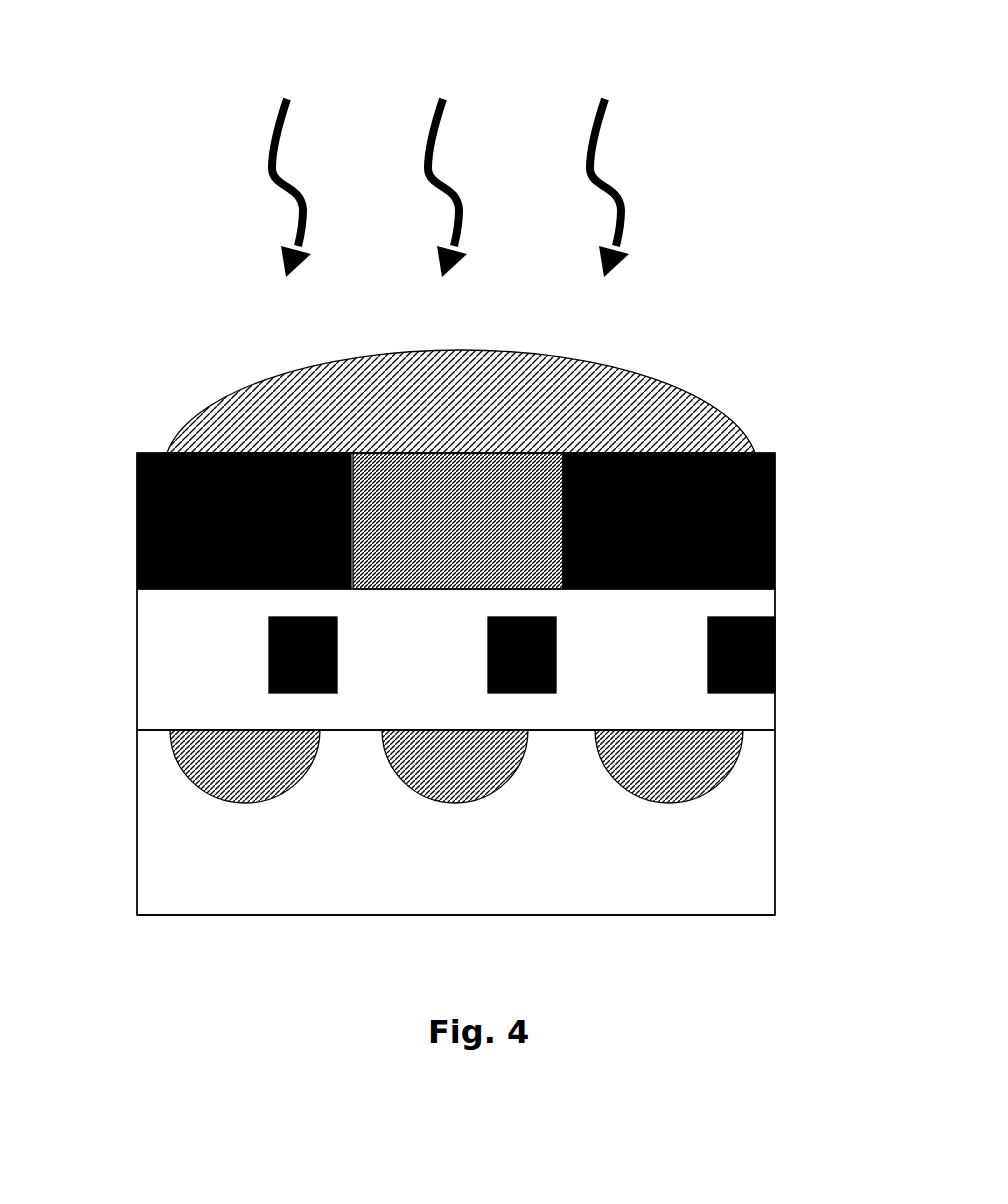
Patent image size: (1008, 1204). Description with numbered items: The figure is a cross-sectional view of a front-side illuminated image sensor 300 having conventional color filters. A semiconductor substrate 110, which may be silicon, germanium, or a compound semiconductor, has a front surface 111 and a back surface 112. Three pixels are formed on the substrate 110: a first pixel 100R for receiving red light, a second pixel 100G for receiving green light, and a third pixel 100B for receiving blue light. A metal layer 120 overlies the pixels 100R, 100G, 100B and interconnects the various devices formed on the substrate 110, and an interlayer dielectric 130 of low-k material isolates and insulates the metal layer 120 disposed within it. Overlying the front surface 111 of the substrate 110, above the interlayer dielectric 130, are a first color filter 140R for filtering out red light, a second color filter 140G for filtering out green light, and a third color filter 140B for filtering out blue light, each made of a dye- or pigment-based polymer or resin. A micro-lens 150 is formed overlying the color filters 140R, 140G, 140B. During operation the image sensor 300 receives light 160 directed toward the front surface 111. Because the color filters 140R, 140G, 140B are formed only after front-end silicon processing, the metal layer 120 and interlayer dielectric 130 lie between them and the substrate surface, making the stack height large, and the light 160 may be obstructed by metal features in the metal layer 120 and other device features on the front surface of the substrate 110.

The light 160 is at (366, 90).
The front-side illuminated image sensor 300 is at (94, 356).
The micro-lens 150 is at (703, 402).
The first color filter 140R is at (137, 520).
The second color filter 140G is at (460, 453).
The third color filter 140B is at (777, 502).
The interlayer dielectric 130 is at (152, 650).
The metal layer 120 is at (268, 661).
The semiconductor substrate 110 is at (137, 860).
The front surface 111 is at (755, 732).
The back surface 112 is at (163, 908).
The first pixel 100R is at (270, 797).
The second pixel 100G is at (472, 795).
The third pixel 100B is at (677, 795).